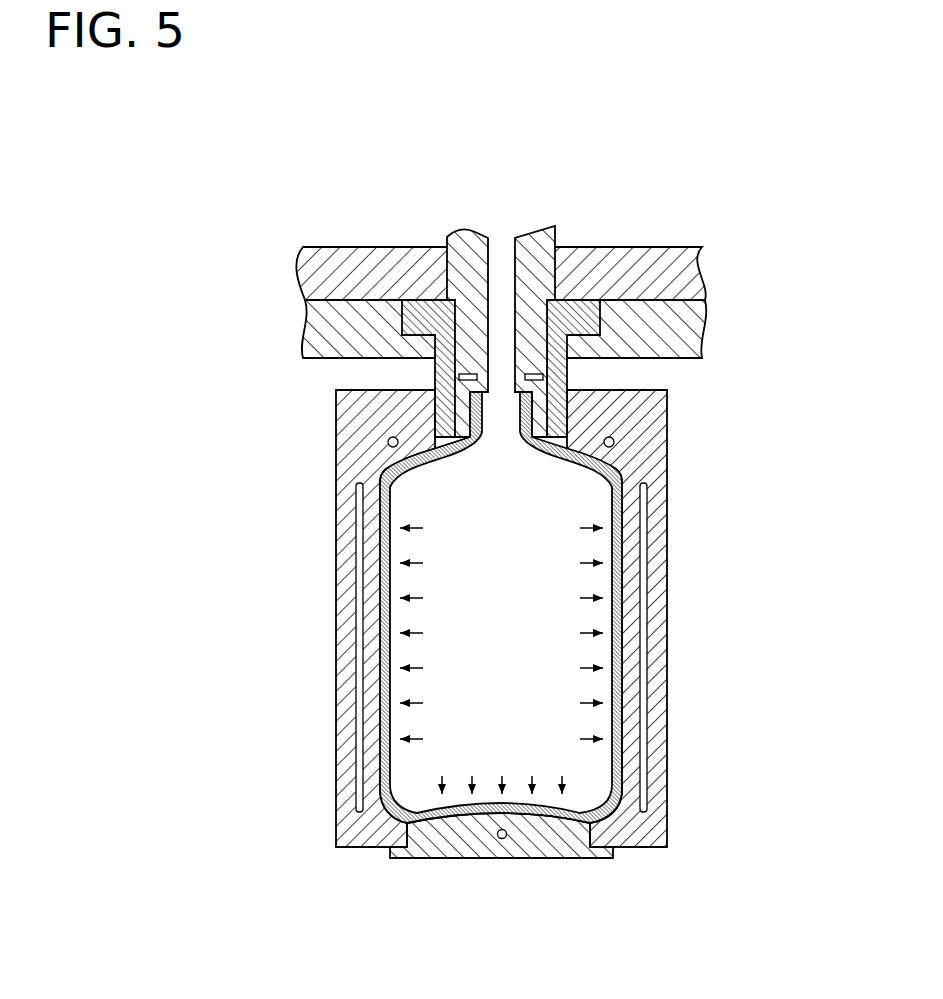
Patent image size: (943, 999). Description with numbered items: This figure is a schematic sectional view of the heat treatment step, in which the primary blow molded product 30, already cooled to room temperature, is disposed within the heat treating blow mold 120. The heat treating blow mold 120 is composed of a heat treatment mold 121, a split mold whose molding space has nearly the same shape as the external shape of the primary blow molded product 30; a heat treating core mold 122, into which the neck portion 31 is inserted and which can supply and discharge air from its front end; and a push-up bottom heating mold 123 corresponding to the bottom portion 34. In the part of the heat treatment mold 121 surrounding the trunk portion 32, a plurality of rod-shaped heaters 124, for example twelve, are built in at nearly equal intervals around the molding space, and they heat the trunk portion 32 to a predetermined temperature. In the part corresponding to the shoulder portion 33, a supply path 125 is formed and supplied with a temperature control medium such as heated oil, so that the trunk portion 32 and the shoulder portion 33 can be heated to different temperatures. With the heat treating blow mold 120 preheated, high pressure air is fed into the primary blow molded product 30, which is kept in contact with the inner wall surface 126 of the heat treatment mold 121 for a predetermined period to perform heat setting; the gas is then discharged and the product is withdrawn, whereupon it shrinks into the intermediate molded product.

The heat treating blow mold 120 is at (674, 153).
The heat treatment mold 121 is at (667, 572).
The heat treating core mold 122 is at (572, 378).
The push-up bottom heating mold 123 is at (455, 845).
The rod-shaped heater 124 is at (357, 557).
The supply path 125 is at (614, 442).
The inner wall surface 126 is at (623, 746).
The primary blow molded product 30 is at (591, 607).
The neck portion 31 is at (463, 383).
The trunk portion 32 is at (619, 702).
The shoulder portion 33 is at (397, 466).
The bottom portion 34 is at (542, 812).